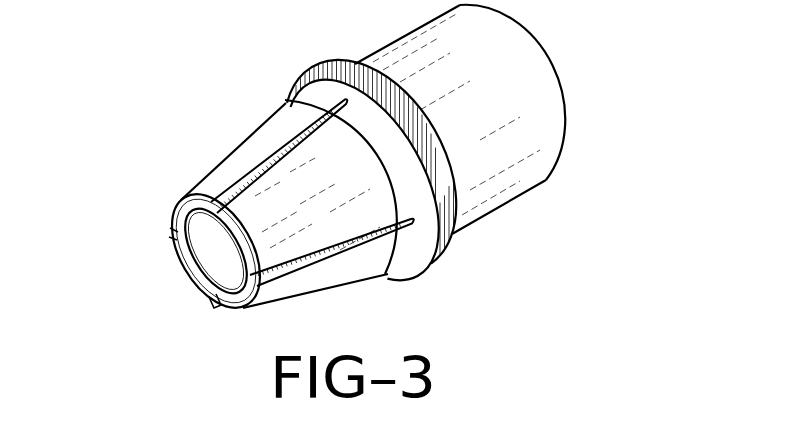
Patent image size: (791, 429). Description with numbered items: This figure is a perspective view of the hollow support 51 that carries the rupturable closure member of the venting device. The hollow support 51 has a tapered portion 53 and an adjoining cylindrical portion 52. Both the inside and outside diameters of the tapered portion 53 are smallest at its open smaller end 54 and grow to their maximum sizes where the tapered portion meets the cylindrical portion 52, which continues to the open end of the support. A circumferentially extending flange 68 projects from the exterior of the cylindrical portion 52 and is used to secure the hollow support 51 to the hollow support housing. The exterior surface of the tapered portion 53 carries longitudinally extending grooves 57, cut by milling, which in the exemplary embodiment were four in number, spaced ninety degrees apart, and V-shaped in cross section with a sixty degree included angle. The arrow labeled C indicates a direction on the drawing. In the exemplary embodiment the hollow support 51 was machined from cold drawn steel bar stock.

The hollow support 51 is at (582, 35).
The cylindrical portion 52 is at (433, 50).
The tapered portion 53 is at (218, 186).
The open smaller end 54 is at (200, 289).
The longitudinally extending grooves 57 is at (282, 153).
The circumferentially extending flange 68 is at (314, 68).
The compression direction C is at (176, 282).